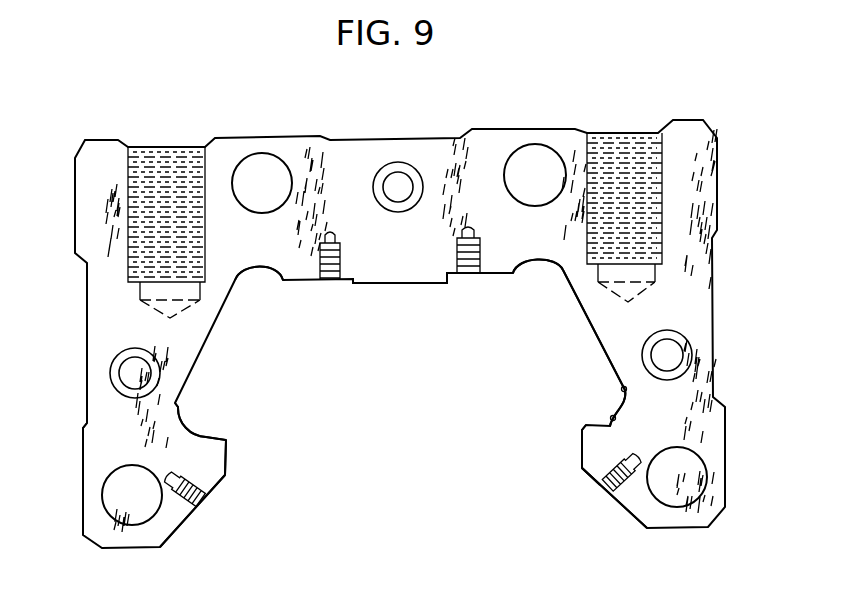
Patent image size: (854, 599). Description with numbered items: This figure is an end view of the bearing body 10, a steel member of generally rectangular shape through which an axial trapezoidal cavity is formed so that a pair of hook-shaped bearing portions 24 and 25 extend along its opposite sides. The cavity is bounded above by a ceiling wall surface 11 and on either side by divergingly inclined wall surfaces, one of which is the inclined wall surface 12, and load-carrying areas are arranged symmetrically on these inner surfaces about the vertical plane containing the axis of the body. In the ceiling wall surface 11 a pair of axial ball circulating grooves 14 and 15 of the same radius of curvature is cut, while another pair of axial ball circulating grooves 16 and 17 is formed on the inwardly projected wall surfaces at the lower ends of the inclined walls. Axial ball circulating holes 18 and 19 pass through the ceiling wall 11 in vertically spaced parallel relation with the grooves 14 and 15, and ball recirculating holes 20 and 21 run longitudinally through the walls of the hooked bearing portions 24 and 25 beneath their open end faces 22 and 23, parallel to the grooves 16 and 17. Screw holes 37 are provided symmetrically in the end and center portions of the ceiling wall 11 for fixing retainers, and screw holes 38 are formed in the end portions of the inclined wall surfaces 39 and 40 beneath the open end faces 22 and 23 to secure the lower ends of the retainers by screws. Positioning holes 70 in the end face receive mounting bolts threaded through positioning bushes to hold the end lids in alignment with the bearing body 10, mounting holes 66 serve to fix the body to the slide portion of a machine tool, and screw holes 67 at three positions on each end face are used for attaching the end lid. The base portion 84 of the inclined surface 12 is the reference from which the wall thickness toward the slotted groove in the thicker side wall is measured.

The bearing body 10 is at (368, 126).
The ceiling wall surface 11 is at (400, 285).
The inclined wall surface 12 is at (590, 326).
The axial ball circulating groove 14 is at (535, 268).
The axial ball circulating groove 15 is at (263, 270).
The axial ball circulating groove 16 is at (615, 421).
The axial ball circulating groove 17 is at (204, 435).
The axial ball circulating hole 18 is at (531, 145).
The axial ball circulating hole 19 is at (250, 158).
The ball recirculating hole 20 is at (705, 470).
The ball recirculating hole 21 is at (137, 521).
The open end face 22 is at (580, 444).
The open end face 23 is at (227, 453).
The hook-shaped bearing portion 24 is at (608, 457).
The hook-shaped bearing portion 25 is at (105, 450).
The screw hole 37 is at (317, 283).
The screw hole 38 is at (200, 498).
The inclined wall surface 39 is at (640, 521).
The inclined wall surface 40 is at (175, 533).
The mounting hole 66 is at (188, 148).
The screw hole 67 is at (392, 203).
The positioning hole 70 is at (404, 163).
The base portion 84 is at (624, 387).